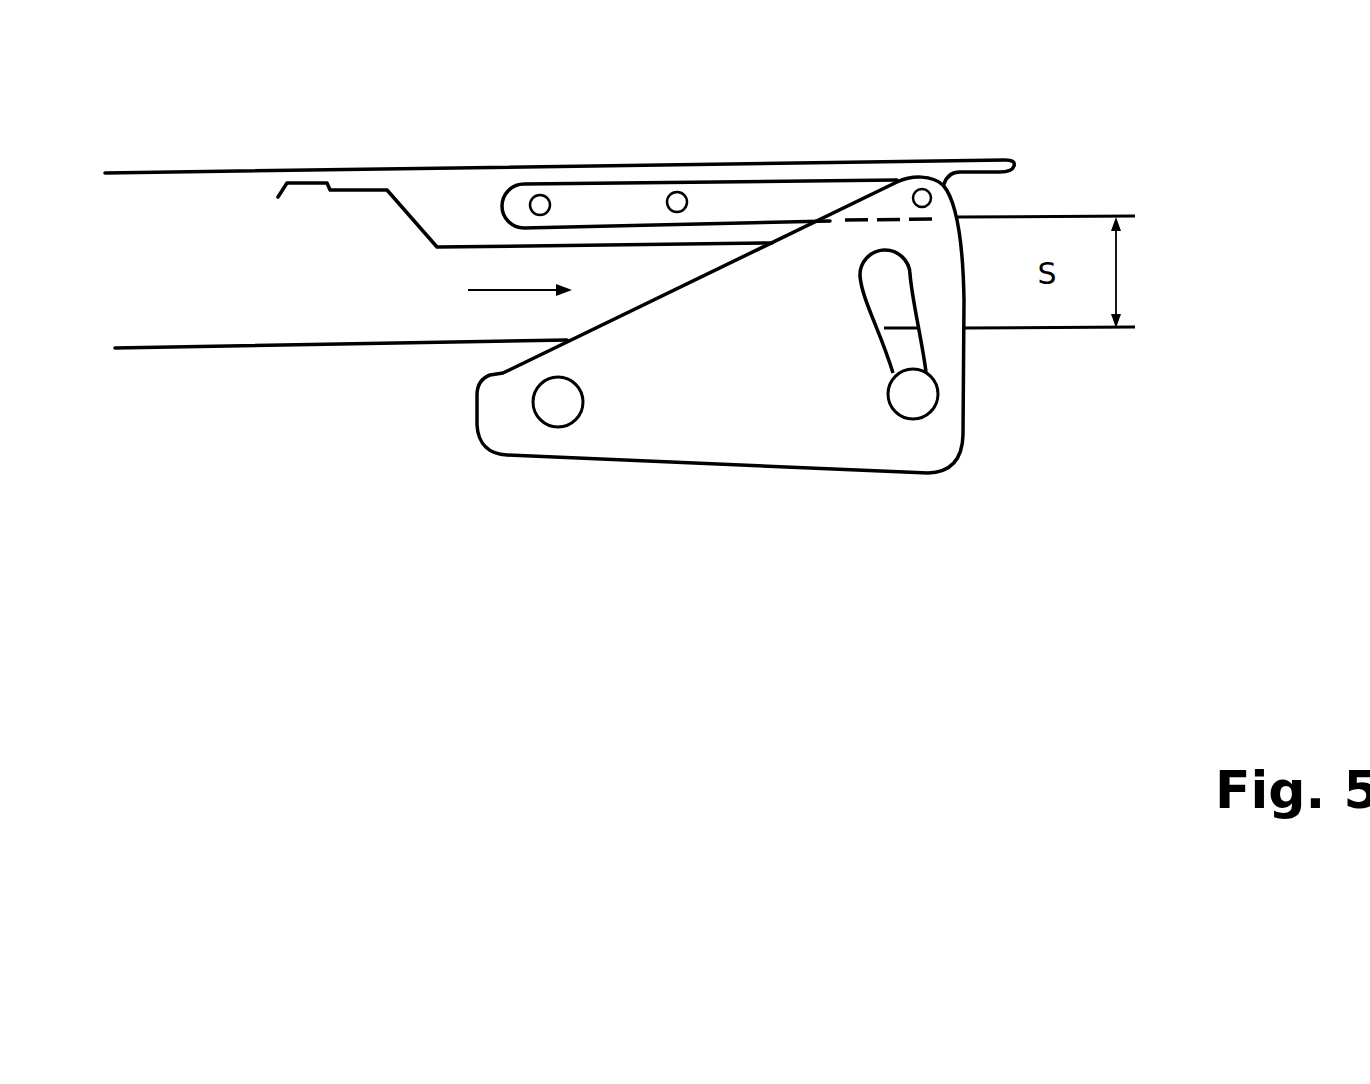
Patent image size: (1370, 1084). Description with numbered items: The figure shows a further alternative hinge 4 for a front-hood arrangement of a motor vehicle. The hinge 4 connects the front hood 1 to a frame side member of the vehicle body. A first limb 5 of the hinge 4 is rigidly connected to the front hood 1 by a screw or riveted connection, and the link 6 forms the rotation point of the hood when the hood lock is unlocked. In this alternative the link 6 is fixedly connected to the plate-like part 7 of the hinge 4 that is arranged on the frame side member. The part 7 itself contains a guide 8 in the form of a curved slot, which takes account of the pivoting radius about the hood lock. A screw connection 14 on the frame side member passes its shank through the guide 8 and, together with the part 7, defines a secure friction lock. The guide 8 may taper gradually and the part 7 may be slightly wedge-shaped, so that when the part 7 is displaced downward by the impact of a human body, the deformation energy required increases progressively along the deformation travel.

The front hood 1 is at (213, 167).
The hinge 4 is at (501, 292).
The first limb 5 is at (605, 203).
The link 6 is at (931, 195).
The holder 7 is at (760, 432).
The guide 8 is at (922, 345).
The screw connection 14 is at (927, 397).